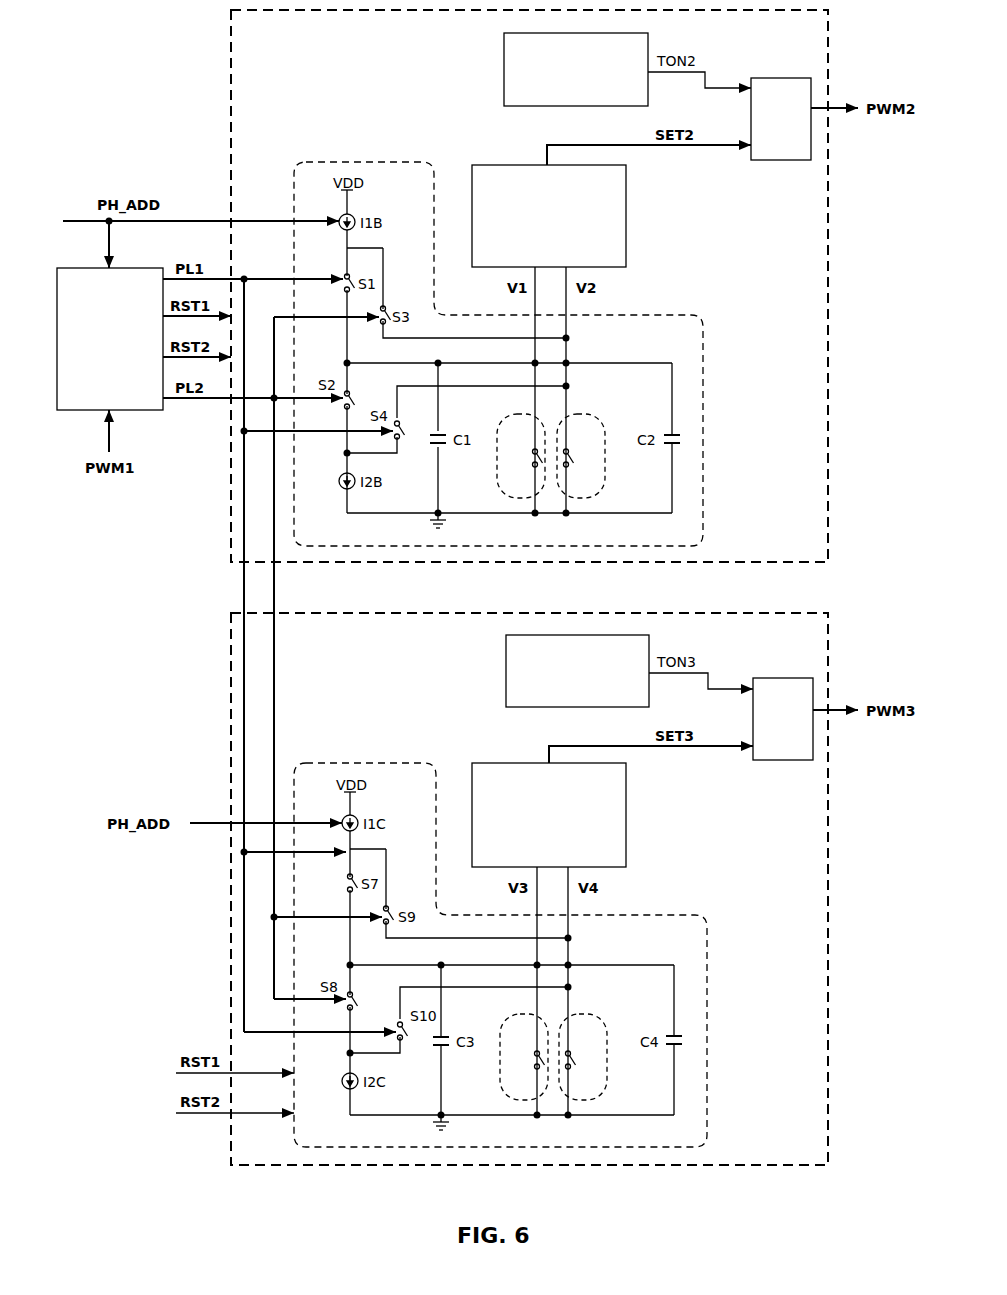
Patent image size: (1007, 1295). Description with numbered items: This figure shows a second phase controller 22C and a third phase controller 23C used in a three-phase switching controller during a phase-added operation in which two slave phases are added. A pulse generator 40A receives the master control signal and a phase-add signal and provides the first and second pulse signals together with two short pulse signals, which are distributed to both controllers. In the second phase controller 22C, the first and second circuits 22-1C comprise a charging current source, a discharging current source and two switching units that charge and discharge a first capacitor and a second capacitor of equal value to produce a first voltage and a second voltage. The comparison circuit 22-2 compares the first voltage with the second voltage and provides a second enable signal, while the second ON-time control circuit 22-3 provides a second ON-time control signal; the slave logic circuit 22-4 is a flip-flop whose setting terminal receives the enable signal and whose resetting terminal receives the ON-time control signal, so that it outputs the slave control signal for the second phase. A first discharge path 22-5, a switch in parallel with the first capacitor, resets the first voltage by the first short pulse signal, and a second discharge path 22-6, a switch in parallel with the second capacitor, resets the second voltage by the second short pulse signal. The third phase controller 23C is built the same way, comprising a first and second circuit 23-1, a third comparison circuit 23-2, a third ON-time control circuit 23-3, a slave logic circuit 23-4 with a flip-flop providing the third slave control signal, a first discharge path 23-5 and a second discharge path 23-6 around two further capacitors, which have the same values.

The pulse generator 40A is at (110, 339).
The second phase controller 22C is at (529, 286).
The first and second circuits 22-1C is at (368, 151).
The comparison circuit 22-2 is at (549, 216).
The second ON-time control circuit 22-3 is at (504, 88).
The slave logic circuit 22-4 is at (790, 160).
The first discharge path 22-5 is at (503, 487).
The second discharge path 22-6 is at (605, 487).
The third phase controller 23C is at (529, 889).
The first and second circuit 23-1 is at (339, 763).
The third comparison circuit 23-2 is at (549, 815).
The third ON-time control circuit 23-3 is at (506, 690).
The slave logic circuit 23-4 is at (792, 760).
The first discharge path 23-5 is at (503, 1089).
The second discharge path 23-6 is at (607, 1089).